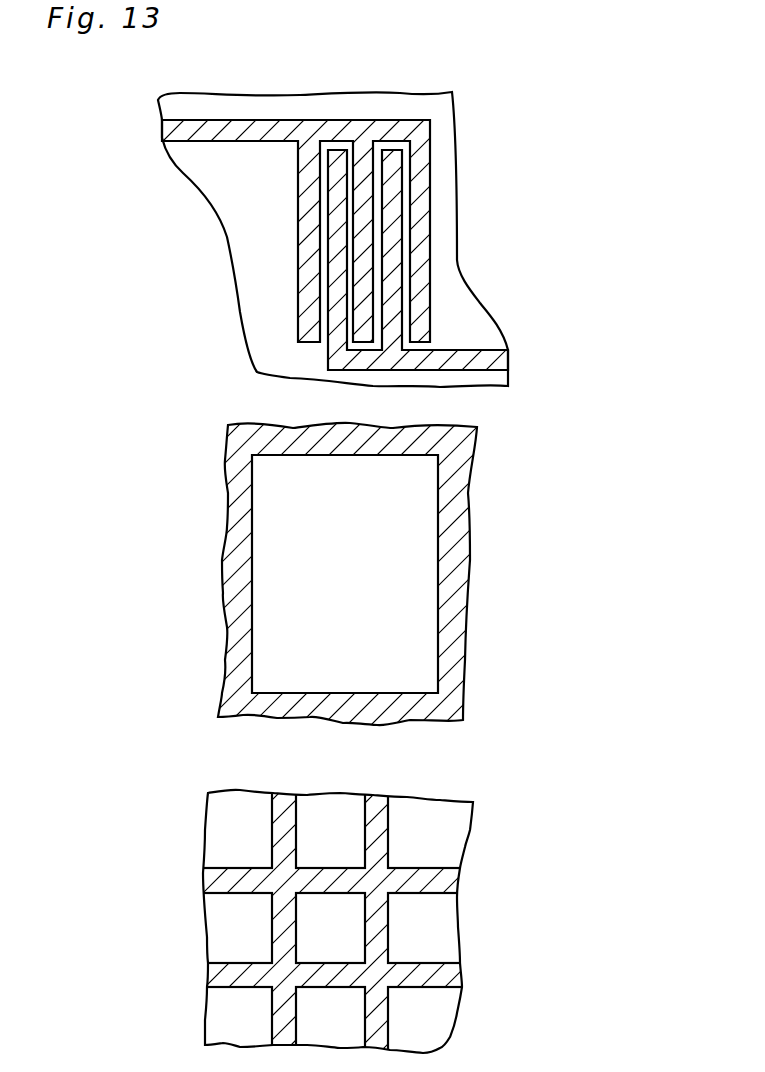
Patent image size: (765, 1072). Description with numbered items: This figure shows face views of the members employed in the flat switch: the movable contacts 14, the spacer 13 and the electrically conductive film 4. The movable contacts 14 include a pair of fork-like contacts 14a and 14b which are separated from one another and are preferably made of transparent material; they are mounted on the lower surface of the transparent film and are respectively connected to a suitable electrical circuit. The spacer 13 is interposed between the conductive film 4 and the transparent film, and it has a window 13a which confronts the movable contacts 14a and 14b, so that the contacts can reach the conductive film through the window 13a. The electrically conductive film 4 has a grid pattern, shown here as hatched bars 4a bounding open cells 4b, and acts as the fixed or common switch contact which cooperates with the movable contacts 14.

The movable switch contacts 14 is at (435, 195).
The fork-like contact 14a is at (363, 195).
The fork-like contact 14b is at (337, 277).
The spacer 13 is at (453, 481).
The window 13a is at (438, 624).
The electrically conductive film 4 is at (427, 868).
The mesh electrode bar 4a is at (283, 828).
The mesh electrode aperture 4b is at (213, 933).